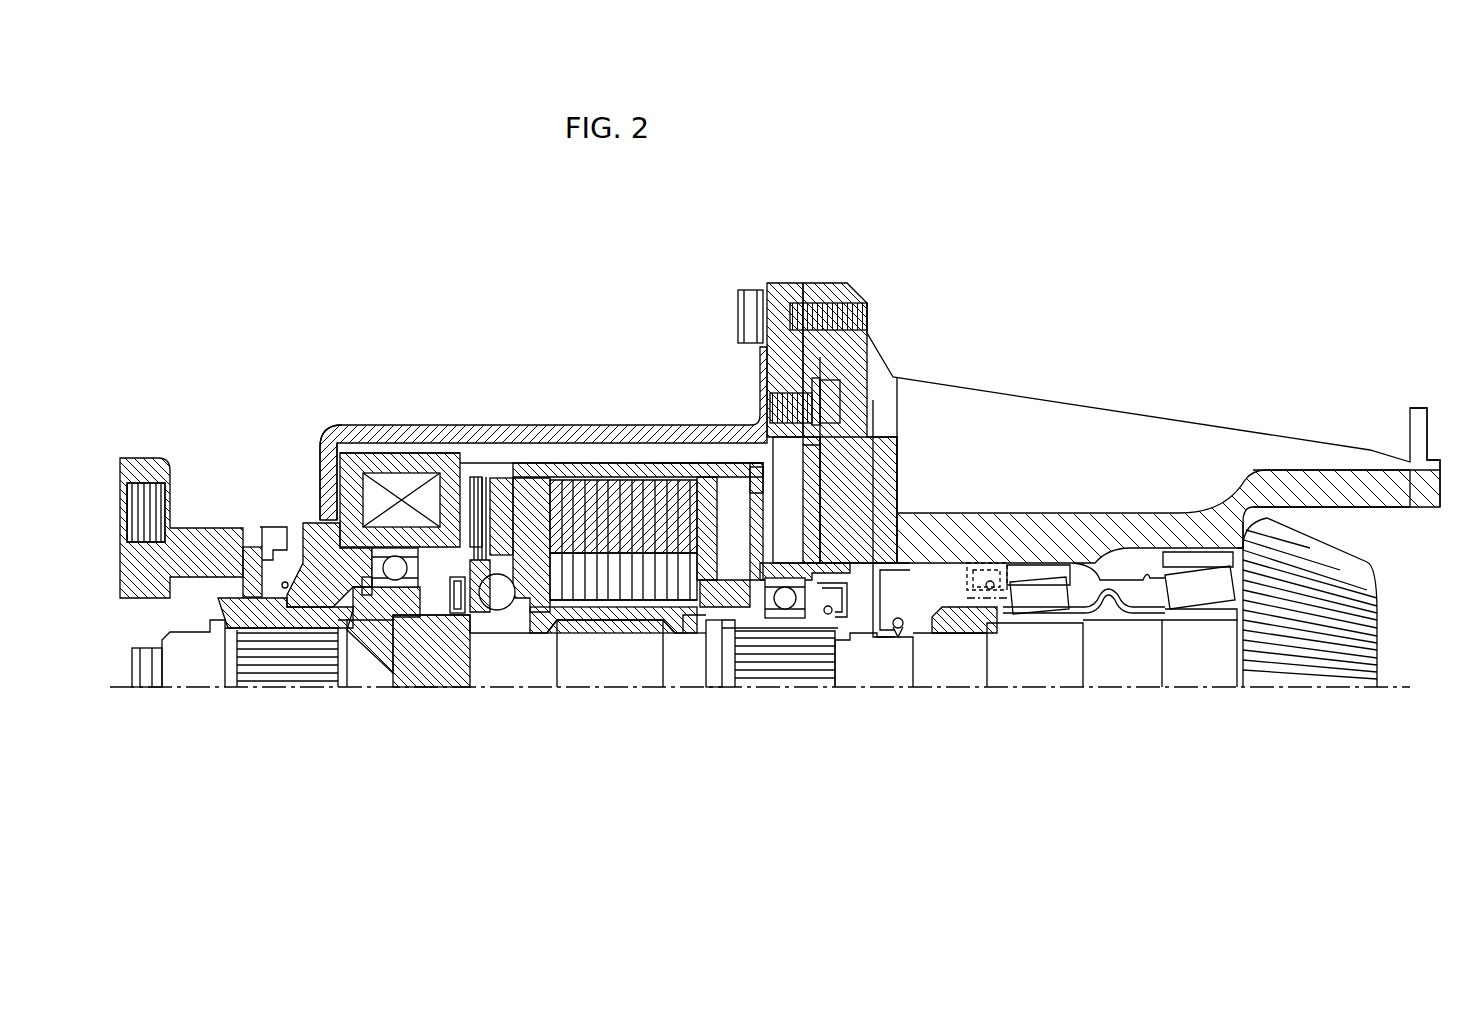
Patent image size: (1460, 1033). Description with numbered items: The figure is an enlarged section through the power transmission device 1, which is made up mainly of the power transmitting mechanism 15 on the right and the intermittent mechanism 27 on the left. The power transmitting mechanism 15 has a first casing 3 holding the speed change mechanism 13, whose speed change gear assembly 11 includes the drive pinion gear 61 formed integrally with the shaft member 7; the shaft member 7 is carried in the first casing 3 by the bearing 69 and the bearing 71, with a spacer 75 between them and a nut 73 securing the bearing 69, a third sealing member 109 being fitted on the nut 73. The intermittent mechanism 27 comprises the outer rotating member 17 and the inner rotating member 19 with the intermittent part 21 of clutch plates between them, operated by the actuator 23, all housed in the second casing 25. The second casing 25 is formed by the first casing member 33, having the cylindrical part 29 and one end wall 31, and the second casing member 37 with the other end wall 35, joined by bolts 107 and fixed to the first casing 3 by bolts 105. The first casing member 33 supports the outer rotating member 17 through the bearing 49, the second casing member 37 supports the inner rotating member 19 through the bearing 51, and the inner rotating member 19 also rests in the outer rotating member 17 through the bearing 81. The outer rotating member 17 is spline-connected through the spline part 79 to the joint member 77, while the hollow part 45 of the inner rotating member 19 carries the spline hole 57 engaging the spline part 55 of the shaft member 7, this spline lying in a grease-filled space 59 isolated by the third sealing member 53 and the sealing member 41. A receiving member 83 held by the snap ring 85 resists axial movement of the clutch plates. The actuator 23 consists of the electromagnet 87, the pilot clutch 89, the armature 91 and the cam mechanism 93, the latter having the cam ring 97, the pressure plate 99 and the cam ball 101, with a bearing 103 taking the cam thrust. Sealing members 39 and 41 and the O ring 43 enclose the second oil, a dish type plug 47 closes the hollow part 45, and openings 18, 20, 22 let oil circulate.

The power transmission device 1 is at (851, 205).
The first casing 3 is at (1125, 415).
The shaft member 7 is at (1127, 672).
The speed change gear assembly 11 is at (1383, 490).
The speed change mechanism 13 is at (1280, 465).
The power transmitting mechanism 15 is at (1338, 372).
The outer rotating member 17 is at (617, 470).
The opening 18 is at (643, 480).
The inner rotating member 19 is at (593, 613).
The opening 20 is at (453, 477).
The intermittent part 21 is at (663, 450).
The opening 22 is at (745, 650).
The actuator 23 is at (348, 403).
The second casing 25 is at (712, 417).
The intermittent mechanism 27 is at (571, 347).
The cylindrical part 29 is at (540, 440).
The end wall 31 is at (327, 475).
The first casing member 33 is at (320, 437).
The end wall 35 is at (802, 490).
The second casing member 37 is at (822, 460).
The sealing member 39 is at (247, 545).
The sealing member 41 is at (827, 627).
The O ring 43 is at (823, 437).
The hollow part 45 is at (642, 673).
The dish type plug 47 is at (695, 668).
The bearing 49 is at (373, 568).
The bearing 51 is at (782, 620).
The third sealing member 53 is at (898, 630).
The spline part 55 is at (795, 660).
The spline hole 57 is at (750, 645).
The space 59 is at (875, 600).
The drive pinion gear 61 is at (1305, 680).
The bearing 69 is at (1033, 625).
The bearing 71 is at (1200, 612).
The nut 73 is at (958, 645).
The spacer 75 is at (1130, 585).
The joint member 77 is at (160, 557).
The spline part 79 is at (243, 650).
The bearing 81 is at (415, 640).
The receiving member 83 is at (707, 480).
The snap ring 85 is at (730, 497).
The electromagnet 87 is at (390, 455).
The pilot clutch 89 is at (477, 455).
The armature 91 is at (500, 480).
The cam mechanism 93 is at (525, 637).
The cam ring 97 is at (468, 630).
The pressure plate 99 is at (503, 622).
The cam ball 101 is at (455, 468).
The bearing 103 is at (455, 625).
The bolt 105 is at (745, 290).
The bolt 107 is at (836, 390).
The third sealing member 109 is at (992, 575).